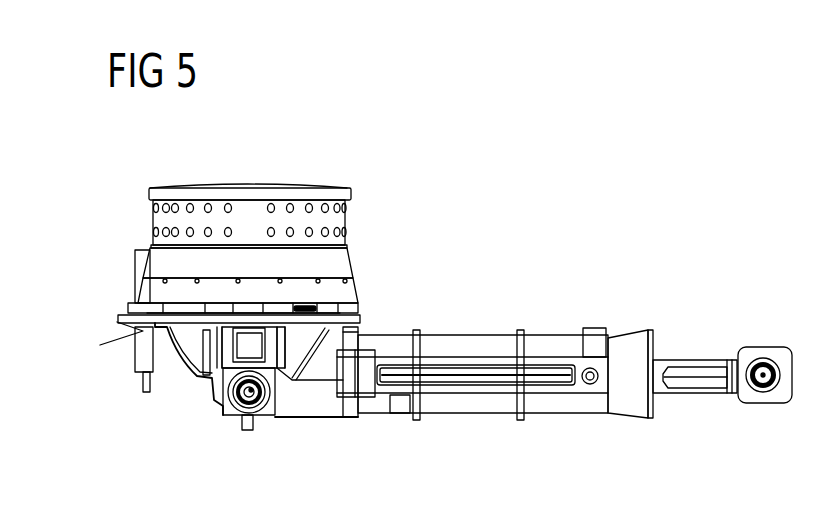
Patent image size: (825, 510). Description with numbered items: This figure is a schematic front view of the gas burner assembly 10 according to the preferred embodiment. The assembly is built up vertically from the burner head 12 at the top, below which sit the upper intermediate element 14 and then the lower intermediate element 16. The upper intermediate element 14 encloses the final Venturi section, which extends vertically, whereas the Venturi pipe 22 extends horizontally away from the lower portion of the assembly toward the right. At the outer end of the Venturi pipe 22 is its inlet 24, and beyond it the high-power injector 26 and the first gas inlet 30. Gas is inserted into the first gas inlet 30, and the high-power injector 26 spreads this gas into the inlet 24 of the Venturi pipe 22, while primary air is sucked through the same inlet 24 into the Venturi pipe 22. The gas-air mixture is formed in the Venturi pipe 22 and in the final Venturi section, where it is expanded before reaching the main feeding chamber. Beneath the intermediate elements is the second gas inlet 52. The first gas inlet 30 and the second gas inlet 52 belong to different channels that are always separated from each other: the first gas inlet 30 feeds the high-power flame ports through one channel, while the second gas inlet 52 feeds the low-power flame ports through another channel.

The gas burner assembly 10 is at (603, 197).
The burner head 12 is at (299, 188).
The upper intermediate element 14 is at (348, 256).
The lower intermediate element 16 is at (348, 287).
The Venturi pipe 22 is at (470, 350).
The inlet 24 is at (653, 408).
The high-power injector 26 is at (717, 372).
The first gas inlet 30 is at (763, 372).
The second gas inlet 52 is at (237, 403).